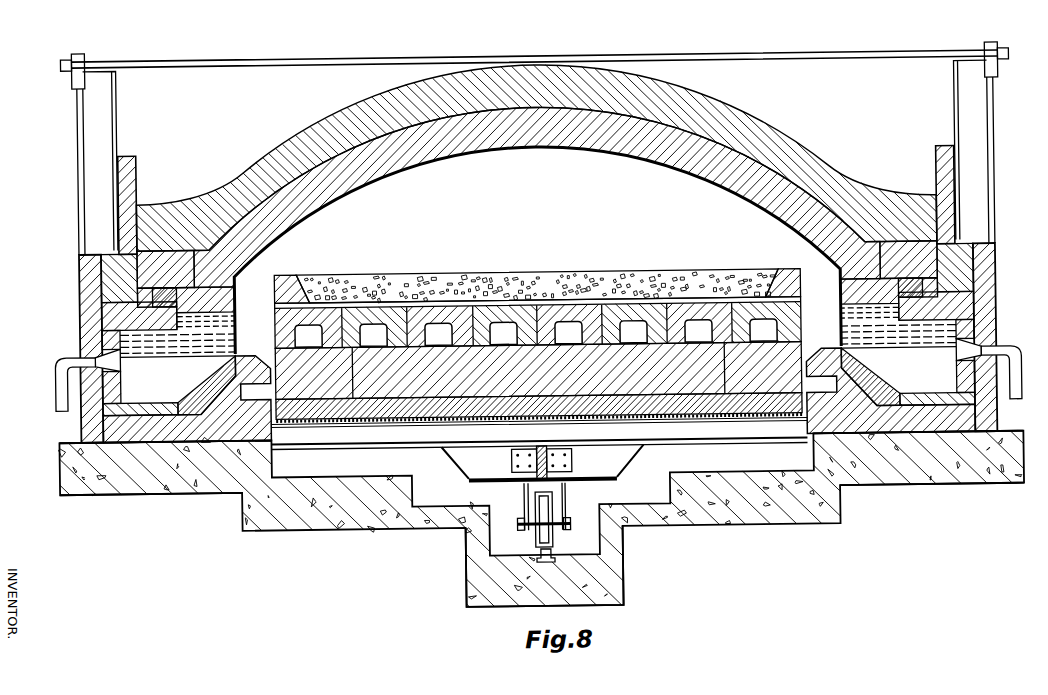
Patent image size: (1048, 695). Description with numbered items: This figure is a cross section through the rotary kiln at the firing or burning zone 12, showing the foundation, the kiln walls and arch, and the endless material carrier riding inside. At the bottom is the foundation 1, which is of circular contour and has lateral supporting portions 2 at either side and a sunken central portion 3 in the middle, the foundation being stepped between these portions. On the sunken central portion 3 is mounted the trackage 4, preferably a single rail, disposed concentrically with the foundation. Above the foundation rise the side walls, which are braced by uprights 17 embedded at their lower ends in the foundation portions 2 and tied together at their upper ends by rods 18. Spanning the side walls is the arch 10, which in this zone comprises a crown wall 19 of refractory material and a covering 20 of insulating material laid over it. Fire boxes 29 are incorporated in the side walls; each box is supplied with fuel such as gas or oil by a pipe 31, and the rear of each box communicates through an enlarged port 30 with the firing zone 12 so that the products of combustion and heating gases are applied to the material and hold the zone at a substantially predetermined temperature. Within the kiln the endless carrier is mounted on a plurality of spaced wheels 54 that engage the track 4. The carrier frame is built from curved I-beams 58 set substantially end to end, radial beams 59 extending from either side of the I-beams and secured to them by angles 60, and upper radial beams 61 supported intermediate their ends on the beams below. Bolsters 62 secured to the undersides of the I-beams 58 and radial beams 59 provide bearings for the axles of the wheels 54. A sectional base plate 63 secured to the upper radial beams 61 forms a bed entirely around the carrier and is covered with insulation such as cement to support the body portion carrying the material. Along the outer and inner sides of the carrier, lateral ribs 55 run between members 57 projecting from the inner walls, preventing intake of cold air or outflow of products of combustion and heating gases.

The foundation 1 is at (542, 522).
The lateral supporting portions 2 is at (176, 488).
The sunken central portion 3 is at (620, 582).
The trackage 4 is at (550, 549).
The arch 10 is at (536, 190).
The firing or burning zone 12 is at (605, 226).
The uprights 17 is at (108, 113).
The rods 18 is at (160, 63).
The crown wall 19 is at (568, 137).
The covering 20 is at (728, 107).
The fire boxes 29 is at (152, 397).
The enlarged port 30 is at (220, 343).
The pipe 31 is at (60, 367).
The wheels 54 is at (533, 524).
The lateral ribs 55 is at (813, 349).
The members 57 is at (258, 352).
The curved I-beams 58 is at (532, 448).
The radial beams 59 is at (442, 450).
The angles 60 is at (509, 462).
The upper radial beams 61 is at (322, 448).
The bolsters 62 is at (520, 484).
The base plate 63 is at (388, 444).